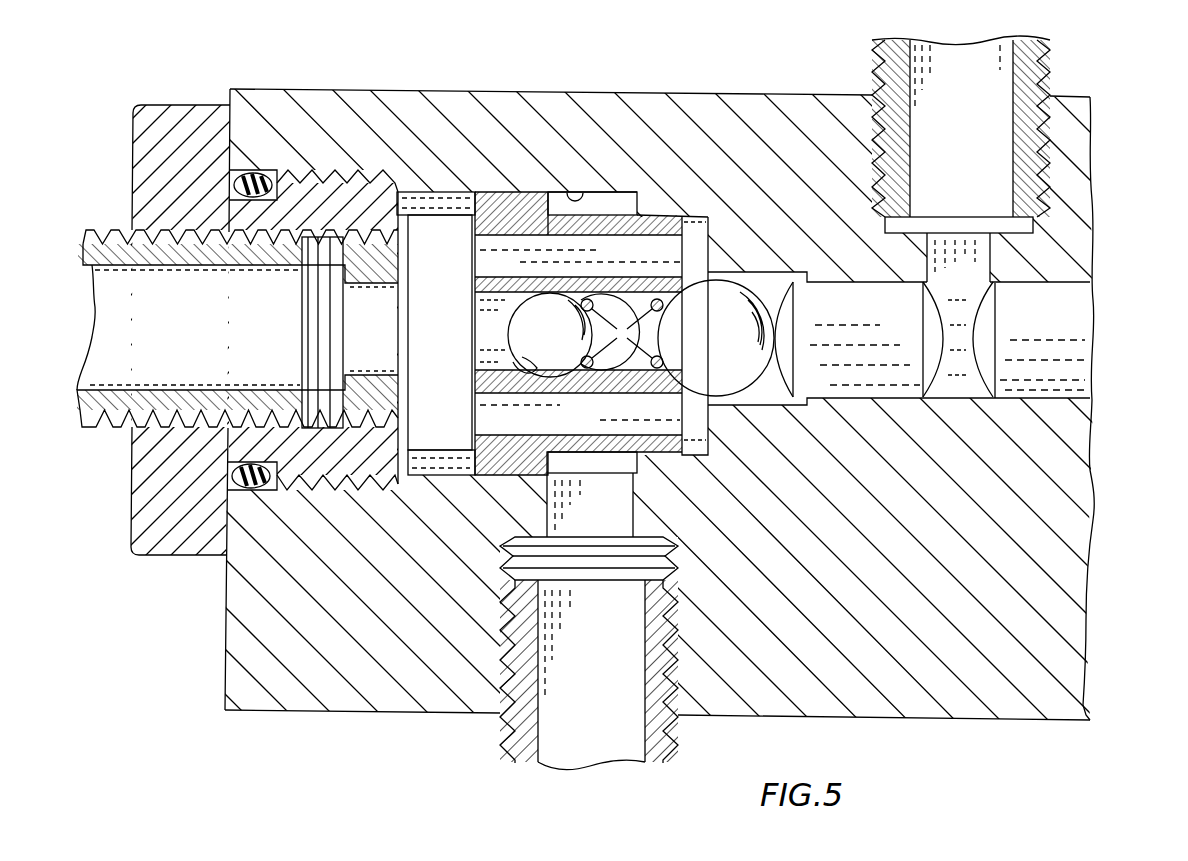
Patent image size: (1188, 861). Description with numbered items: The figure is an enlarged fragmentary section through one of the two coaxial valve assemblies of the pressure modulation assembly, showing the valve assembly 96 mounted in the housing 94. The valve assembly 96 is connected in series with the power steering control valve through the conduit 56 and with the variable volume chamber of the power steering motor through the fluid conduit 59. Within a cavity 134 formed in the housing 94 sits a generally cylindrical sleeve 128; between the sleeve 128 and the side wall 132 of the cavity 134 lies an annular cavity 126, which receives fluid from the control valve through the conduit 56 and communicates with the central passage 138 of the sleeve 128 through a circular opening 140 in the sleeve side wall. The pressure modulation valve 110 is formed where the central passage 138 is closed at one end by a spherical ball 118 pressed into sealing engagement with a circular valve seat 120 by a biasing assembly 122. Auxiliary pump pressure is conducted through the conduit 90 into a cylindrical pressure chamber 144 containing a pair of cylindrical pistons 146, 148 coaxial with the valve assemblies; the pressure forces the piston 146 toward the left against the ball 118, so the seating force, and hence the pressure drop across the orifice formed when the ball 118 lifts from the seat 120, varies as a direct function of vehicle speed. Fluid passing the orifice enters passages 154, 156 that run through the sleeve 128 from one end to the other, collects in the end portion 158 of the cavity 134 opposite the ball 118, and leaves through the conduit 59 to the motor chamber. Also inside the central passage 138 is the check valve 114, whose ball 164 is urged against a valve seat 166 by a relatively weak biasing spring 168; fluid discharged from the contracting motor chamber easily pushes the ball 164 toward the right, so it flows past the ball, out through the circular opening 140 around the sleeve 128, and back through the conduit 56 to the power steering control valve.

The conduit 56 is at (680, 738).
The fluid conduit 59 is at (107, 230).
The conduit 90 is at (1037, 43).
The housing 94 is at (340, 690).
The valve assembly 96 is at (623, 182).
The pressure modulation valve 110 is at (700, 272).
The check valve 114 is at (498, 342).
The spherical ball 118 is at (732, 308).
The circular valve seat 120 is at (695, 393).
The biasing assembly 122 is at (963, 293).
The annular cavity 126 is at (608, 463).
The cylindrical sleeve 128 is at (505, 457).
The side wall 132 is at (572, 200).
The cavity 134 is at (430, 227).
The central passage 138 is at (647, 298).
The circular opening 140 is at (602, 303).
The cylindrical pressure chamber 144 is at (955, 380).
The cylindrical piston 146 is at (860, 375).
The cylindrical piston 148 is at (1065, 382).
The passage 154 is at (492, 255).
The passage 156 is at (480, 427).
The end portion 158 is at (398, 412).
The ball 164 is at (557, 383).
The valve seat 166 is at (523, 357).
The biasing spring 168 is at (597, 370).